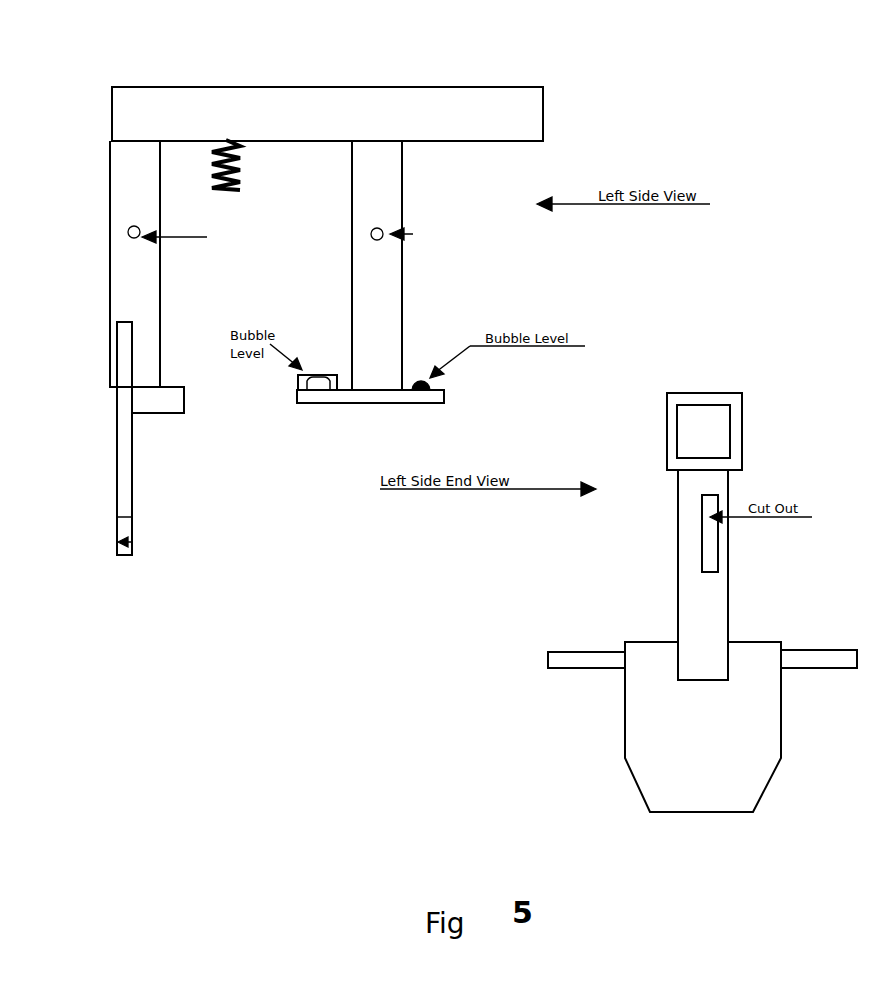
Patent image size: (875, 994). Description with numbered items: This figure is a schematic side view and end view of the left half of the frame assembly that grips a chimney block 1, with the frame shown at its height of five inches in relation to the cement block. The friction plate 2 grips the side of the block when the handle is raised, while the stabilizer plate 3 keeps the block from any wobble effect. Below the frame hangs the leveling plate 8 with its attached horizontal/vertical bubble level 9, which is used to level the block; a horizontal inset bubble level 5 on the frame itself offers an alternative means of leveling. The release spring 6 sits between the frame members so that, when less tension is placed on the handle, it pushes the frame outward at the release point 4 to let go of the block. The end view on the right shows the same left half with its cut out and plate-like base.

The chimney block 1 is at (440, 110).
The friction plate 2 is at (113, 417).
The stabilizer plate 3 is at (173, 400).
The frame release point 4 is at (120, 253).
The horizontal inset bubble level 5 is at (207, 84).
The release spring 6 is at (248, 168).
The leveling plate 8 is at (383, 398).
The horizontal/vertical bubble level 9 is at (408, 377).